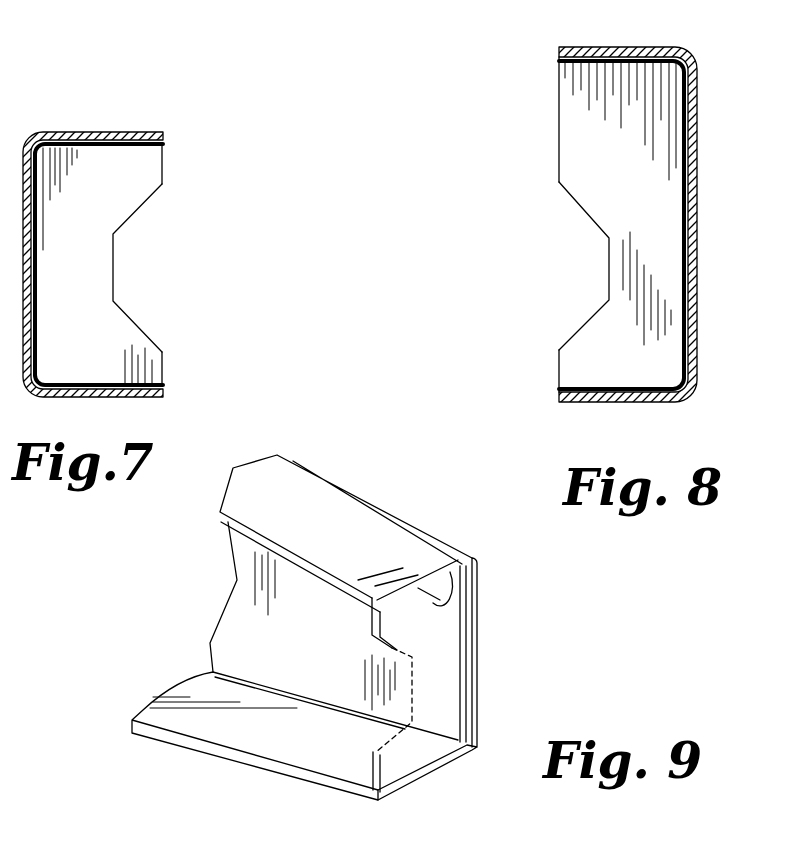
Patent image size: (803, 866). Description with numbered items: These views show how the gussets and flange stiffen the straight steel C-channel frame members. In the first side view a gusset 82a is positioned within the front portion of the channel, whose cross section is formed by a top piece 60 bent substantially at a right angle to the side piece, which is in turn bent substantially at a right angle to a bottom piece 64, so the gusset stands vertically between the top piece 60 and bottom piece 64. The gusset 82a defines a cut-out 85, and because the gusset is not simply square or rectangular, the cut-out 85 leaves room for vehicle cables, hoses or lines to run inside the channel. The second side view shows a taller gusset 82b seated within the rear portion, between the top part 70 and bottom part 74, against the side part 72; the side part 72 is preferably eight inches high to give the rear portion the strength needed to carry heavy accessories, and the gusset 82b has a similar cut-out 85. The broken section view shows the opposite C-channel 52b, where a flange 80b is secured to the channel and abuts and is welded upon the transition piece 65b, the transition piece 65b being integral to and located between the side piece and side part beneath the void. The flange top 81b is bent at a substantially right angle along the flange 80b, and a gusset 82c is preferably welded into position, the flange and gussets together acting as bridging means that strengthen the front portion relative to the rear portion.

In FIG. 7, the top piece 60 is at (96, 131).
In FIG. 7, the bottom piece 64 is at (138, 398).
In FIG. 7, the gusset 82a is at (102, 257).
In FIG. 7, the cut-out 85 is at (170, 274).
In FIG. 8, the cut-out 85 is at (558, 255).
In FIG. 8, the top part 70 is at (628, 202).
In FIG. 8, the side part 72 is at (700, 189).
In FIG. 8, the bottom part 74 is at (612, 404).
In FIG. 8, the gusset 82b is at (640, 168).
In FIG. 9, the flange 80b is at (355, 533).
In FIG. 9, the C-channel 52b is at (178, 609).
In FIG. 9, the transition piece 65b is at (322, 637).
In FIG. 9, the flange top 81b is at (445, 603).
In FIG. 9, the gusset 82c is at (447, 687).